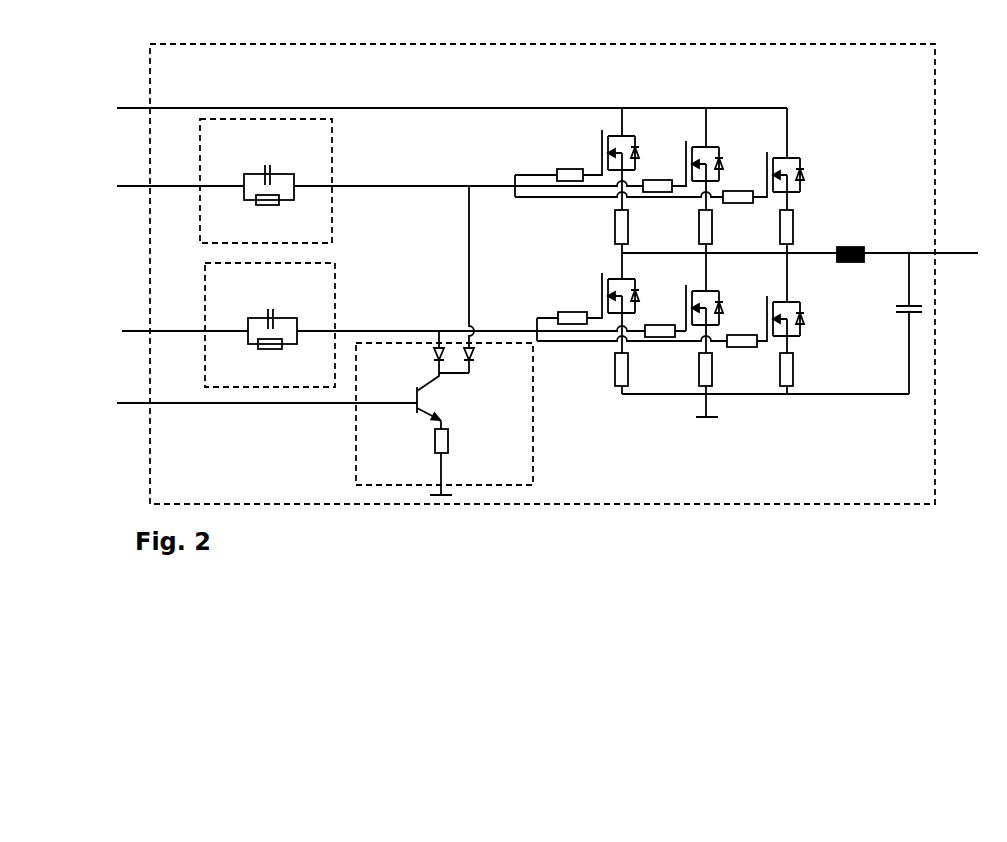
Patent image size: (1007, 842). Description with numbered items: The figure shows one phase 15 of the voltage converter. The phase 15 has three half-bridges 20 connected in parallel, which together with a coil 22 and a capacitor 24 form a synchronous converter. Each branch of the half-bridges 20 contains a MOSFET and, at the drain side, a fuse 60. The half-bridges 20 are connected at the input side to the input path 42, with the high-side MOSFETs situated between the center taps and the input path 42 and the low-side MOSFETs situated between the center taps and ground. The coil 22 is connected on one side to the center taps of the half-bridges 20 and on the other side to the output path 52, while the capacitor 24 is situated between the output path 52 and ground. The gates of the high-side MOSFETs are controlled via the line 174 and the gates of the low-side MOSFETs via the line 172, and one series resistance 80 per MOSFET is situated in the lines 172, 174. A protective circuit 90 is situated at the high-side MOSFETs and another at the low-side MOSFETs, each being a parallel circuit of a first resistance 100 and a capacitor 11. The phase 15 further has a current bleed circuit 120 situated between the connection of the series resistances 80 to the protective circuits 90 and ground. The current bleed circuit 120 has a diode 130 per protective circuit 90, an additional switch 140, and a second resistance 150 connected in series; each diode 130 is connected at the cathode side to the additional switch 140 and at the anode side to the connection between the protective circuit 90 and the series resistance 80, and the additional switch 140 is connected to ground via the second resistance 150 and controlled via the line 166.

The phase 15 is at (148, 70).
The input path 42 is at (133, 109).
The line 174 is at (133, 187).
The line 172 is at (137, 332).
The line 166 is at (137, 404).
The protective circuit 90 is at (206, 269).
The capacitor 11 is at (272, 166).
The first resistance 100 is at (271, 206).
The diode 130 is at (435, 355).
The additional switch 140 is at (421, 420).
The second resistance 150 is at (449, 441).
The current bleed circuit 120 is at (533, 443).
The half-bridge 20 is at (623, 100).
The series resistance 80 is at (556, 171).
The fuse 60 is at (799, 218).
The coil 22 is at (857, 247).
The output path 52 is at (948, 252).
The capacitor 24 is at (899, 314).